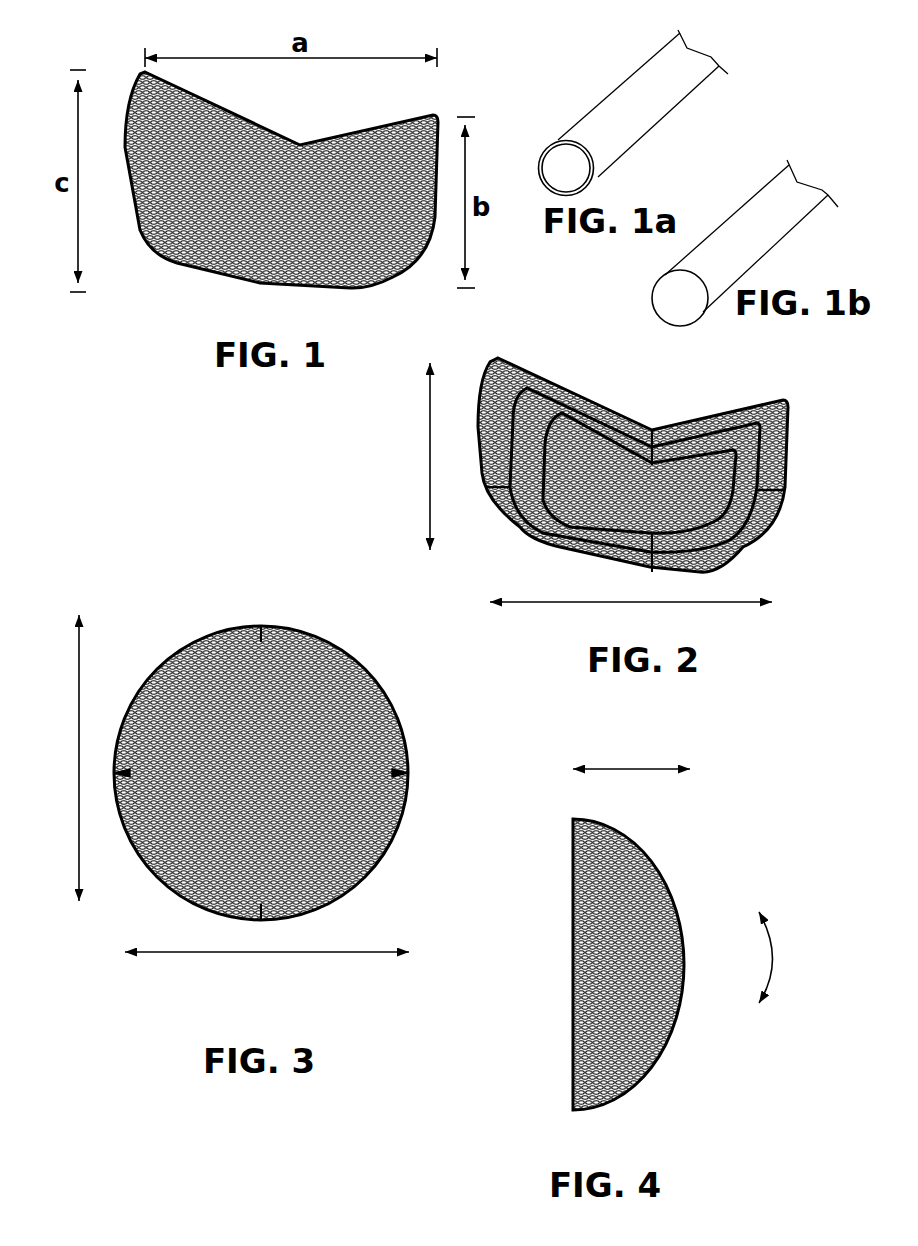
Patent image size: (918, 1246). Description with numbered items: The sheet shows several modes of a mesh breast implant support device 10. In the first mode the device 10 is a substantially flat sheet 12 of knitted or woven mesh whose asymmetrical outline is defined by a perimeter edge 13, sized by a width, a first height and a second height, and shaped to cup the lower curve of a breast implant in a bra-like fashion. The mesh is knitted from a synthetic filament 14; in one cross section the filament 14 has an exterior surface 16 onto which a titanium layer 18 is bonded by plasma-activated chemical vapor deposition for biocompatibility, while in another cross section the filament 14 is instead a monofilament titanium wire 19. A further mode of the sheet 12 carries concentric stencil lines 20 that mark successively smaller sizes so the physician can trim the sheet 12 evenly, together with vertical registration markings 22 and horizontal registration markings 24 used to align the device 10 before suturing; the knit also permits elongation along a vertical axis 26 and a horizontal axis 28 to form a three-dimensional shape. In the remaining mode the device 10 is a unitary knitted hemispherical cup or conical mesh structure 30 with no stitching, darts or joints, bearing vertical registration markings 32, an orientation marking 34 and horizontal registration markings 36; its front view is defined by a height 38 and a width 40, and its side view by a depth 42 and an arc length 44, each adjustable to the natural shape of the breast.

In FIG. 1, the device 10 is at (302, 185).
In FIG. 2, the device 10 is at (634, 440).
In FIG. 3, the device 10 is at (274, 731).
In FIG. 4, the device 10 is at (660, 934).
In FIG. 1, the flat sheet 12 is at (262, 195).
In FIG. 2, the flat sheet 12 is at (634, 452).
In FIG. 1, the perimeter edge 13 is at (182, 263).
In FIG. 1, the filament 14 is at (281, 195).
In FIG. 1a, the filament 14 is at (573, 162).
In FIG. 1b, the filament 14 is at (672, 295).
In FIG. 2, the filament 14 is at (634, 476).
In FIG. 3, the filament 14 is at (274, 765).
In FIG. 4, the filament 14 is at (605, 961).
In FIG. 1a, the exterior surface 16 is at (613, 113).
In FIG. 1a, the titanium layer 18 is at (598, 128).
In FIG. 1b, the monofilament titanium wire 19 is at (730, 241).
In FIG. 2, the stencil lines 20 is at (720, 433).
In FIG. 2, the vertical registration markings 22 is at (648, 428).
In FIG. 2, the horizontal registration markings 24 is at (485, 487).
In FIG. 2, the vertical axis 26 is at (430, 452).
In FIG. 2, the horizontal axis 28 is at (567, 605).
In FIG. 3, the mesh structure 30 is at (274, 765).
In FIG. 4, the mesh structure 30 is at (618, 961).
In FIG. 3, the vertical registration markings 32 is at (257, 627).
In FIG. 3, the orientation marking 34 is at (268, 650).
In FIG. 3, the horizontal registration markings 36 is at (116, 772).
In FIG. 4, the horizontal registration markings 36 is at (583, 965).
In FIG. 3, the height 38 is at (76, 746).
In FIG. 3, the width 40 is at (184, 955).
In FIG. 4, the depth 42 is at (623, 765).
In FIG. 4, the arc length 44 is at (771, 969).